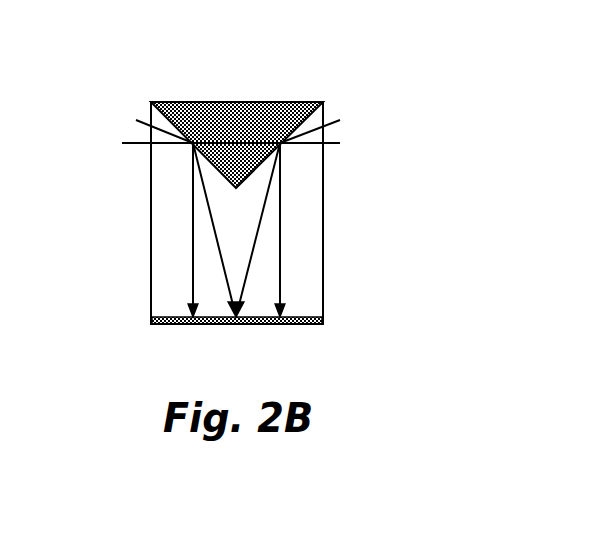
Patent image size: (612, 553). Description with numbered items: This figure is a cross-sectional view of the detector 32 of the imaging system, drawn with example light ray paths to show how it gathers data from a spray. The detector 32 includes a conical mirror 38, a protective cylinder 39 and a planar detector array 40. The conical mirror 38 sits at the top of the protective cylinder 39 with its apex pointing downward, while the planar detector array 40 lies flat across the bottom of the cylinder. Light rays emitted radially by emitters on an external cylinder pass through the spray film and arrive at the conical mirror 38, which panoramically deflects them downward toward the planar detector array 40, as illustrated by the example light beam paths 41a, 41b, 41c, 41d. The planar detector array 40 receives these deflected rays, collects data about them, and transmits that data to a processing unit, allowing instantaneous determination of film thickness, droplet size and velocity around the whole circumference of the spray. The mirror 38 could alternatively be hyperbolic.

The detector 32 is at (407, 45).
The conical mirror 38 is at (287, 102).
The protective cylinder 39 is at (325, 288).
The planar detector array 40 is at (267, 326).
The light beam path 41a is at (142, 143).
The light beam path 41b is at (137, 118).
The light beam path 41c is at (338, 122).
The light beam path 41d is at (333, 147).